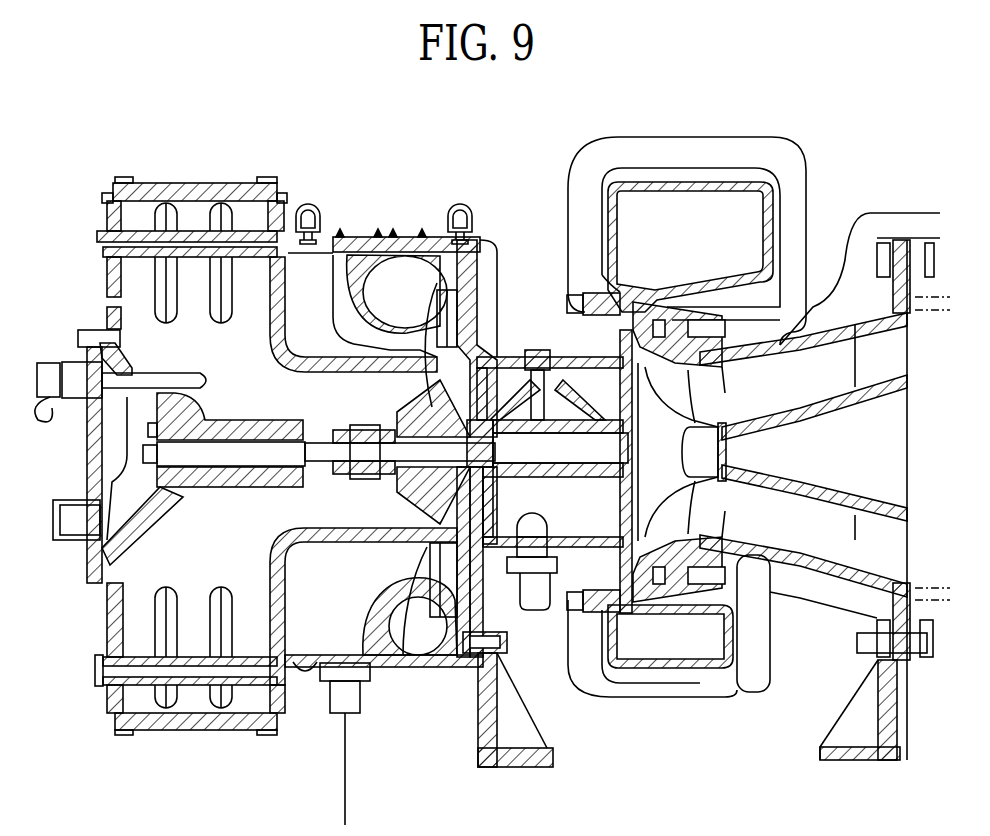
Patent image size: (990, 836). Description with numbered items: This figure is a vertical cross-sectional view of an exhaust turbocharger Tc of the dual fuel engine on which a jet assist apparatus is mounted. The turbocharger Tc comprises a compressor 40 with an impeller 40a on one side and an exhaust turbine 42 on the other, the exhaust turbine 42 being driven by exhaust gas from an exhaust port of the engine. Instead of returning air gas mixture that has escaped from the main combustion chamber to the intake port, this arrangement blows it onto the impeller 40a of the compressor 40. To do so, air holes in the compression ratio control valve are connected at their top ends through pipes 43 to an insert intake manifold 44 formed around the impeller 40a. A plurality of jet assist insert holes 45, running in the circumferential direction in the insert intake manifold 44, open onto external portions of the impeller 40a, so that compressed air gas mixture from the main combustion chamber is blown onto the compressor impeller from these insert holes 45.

The compressor 40 is at (353, 213).
The impeller 40a is at (432, 400).
The exhaust turbine 42 is at (655, 455).
The pipes 43 is at (345, 778).
The insert intake manifold 44 is at (335, 608).
The jet assist insert holes 45 is at (405, 655).
The exhaust turbocharger Tc is at (675, 728).